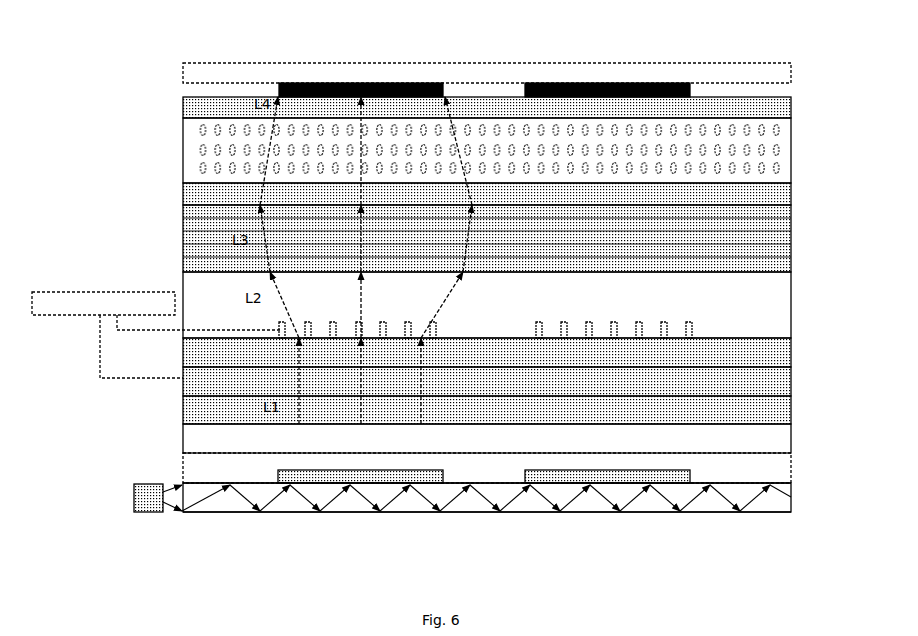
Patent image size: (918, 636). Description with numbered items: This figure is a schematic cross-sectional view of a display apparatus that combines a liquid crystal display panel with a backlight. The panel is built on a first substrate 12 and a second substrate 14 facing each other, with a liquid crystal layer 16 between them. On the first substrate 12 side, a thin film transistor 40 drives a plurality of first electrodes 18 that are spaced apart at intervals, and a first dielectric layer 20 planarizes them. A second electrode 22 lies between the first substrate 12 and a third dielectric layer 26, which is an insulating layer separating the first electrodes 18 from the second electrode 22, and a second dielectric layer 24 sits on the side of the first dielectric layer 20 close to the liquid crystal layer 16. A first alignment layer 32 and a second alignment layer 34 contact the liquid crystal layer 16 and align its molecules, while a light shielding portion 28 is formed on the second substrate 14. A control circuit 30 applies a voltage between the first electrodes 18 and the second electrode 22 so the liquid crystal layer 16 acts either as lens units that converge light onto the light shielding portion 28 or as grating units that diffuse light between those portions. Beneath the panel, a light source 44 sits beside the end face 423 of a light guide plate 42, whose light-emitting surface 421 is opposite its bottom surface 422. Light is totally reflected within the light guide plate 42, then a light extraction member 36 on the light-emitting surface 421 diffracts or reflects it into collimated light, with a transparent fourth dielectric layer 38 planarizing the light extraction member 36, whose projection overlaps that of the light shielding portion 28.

The first substrate 12 is at (791, 435).
The second substrate 14 is at (791, 73).
The liquid crystal layer 16 is at (791, 150).
The first electrodes 18 is at (485, 314).
The first dielectric layer 20 is at (791, 294).
The second electrode 22 is at (791, 379).
The second dielectric layer 24 is at (791, 239).
The third dielectric layer 26 is at (791, 351).
The light shielding portion 28 is at (618, 83).
The control circuit 30 is at (157, 335).
The first alignment layer 32 is at (791, 196).
The second alignment layer 34 is at (791, 107).
The light extraction member 36 is at (484, 467).
The fourth dielectric layer 38 is at (791, 470).
The thin film transistor 40 is at (791, 407).
The light guide plate 42 is at (791, 498).
The light source 44 is at (134, 497).
The light-emitting surface 421 is at (198, 485).
The bottom surface 422 is at (245, 513).
The end face 423 is at (178, 513).